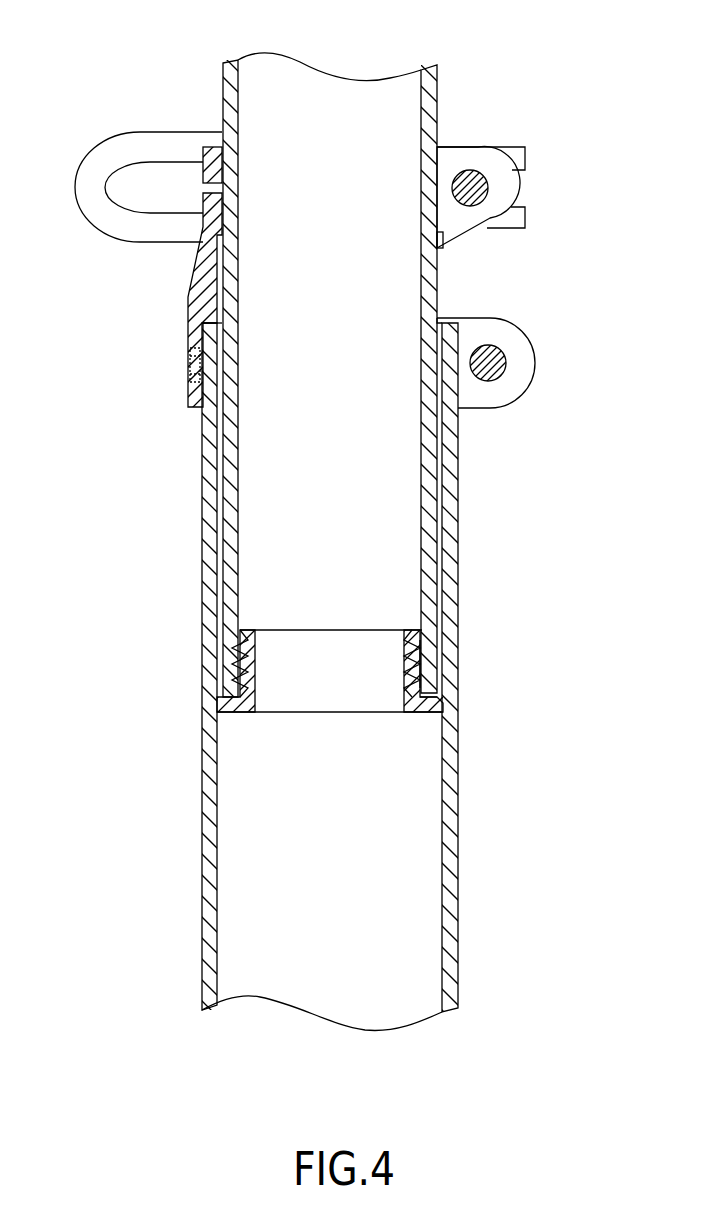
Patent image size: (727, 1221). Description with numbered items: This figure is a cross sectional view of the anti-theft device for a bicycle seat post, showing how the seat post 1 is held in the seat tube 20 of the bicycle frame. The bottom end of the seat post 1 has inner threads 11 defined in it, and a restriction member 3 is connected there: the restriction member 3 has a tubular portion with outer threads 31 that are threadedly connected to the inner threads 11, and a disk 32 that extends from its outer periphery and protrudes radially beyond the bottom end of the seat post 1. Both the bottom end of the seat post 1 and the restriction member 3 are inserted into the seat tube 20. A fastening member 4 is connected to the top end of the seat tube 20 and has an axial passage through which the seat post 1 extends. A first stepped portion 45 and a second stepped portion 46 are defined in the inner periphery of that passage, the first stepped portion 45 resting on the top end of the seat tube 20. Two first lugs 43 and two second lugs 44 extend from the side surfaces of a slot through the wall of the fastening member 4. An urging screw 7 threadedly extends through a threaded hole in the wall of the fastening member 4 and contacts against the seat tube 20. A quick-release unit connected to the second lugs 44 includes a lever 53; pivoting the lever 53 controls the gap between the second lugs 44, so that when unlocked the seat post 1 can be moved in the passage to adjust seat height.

The seat post 1 is at (442, 74).
The second lugs 44 is at (462, 152).
The first lugs 43 is at (479, 327).
The second stepped portion 46 is at (231, 237).
The first stepped portion 45 is at (221, 332).
The lever 53 is at (138, 233).
The fastening member 4 is at (173, 304).
The urging screw 7 is at (186, 376).
The seat tube 20 is at (197, 769).
The restriction member 3 is at (406, 722).
The inner threads 11 is at (410, 632).
The outer threads 31 is at (423, 660).
The disk 32 is at (435, 692).